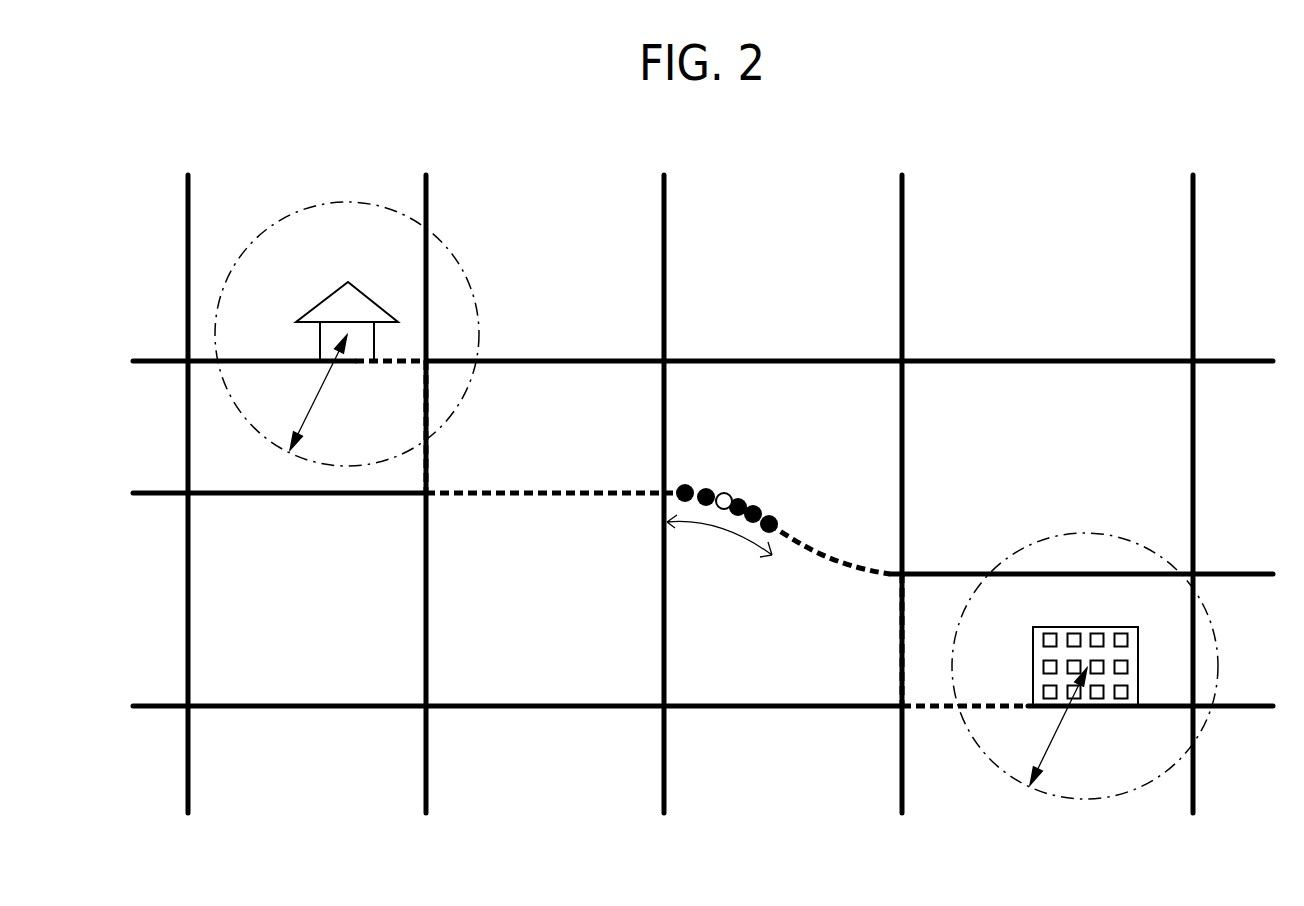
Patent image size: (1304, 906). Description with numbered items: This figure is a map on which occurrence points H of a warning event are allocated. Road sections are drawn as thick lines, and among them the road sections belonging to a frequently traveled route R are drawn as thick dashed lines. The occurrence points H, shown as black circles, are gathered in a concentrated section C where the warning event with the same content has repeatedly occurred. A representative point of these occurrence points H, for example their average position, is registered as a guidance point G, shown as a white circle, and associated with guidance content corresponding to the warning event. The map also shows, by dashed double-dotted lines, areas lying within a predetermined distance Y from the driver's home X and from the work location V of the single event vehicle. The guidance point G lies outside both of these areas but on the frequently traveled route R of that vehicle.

The driver's home X is at (363, 295).
The predetermined distance Y is at (688, 560).
The frequently traveled route R is at (533, 490).
The occurrence points H is at (775, 515).
The guidance point G is at (728, 493).
The concentrated section C is at (714, 530).
The work location V is at (1098, 627).